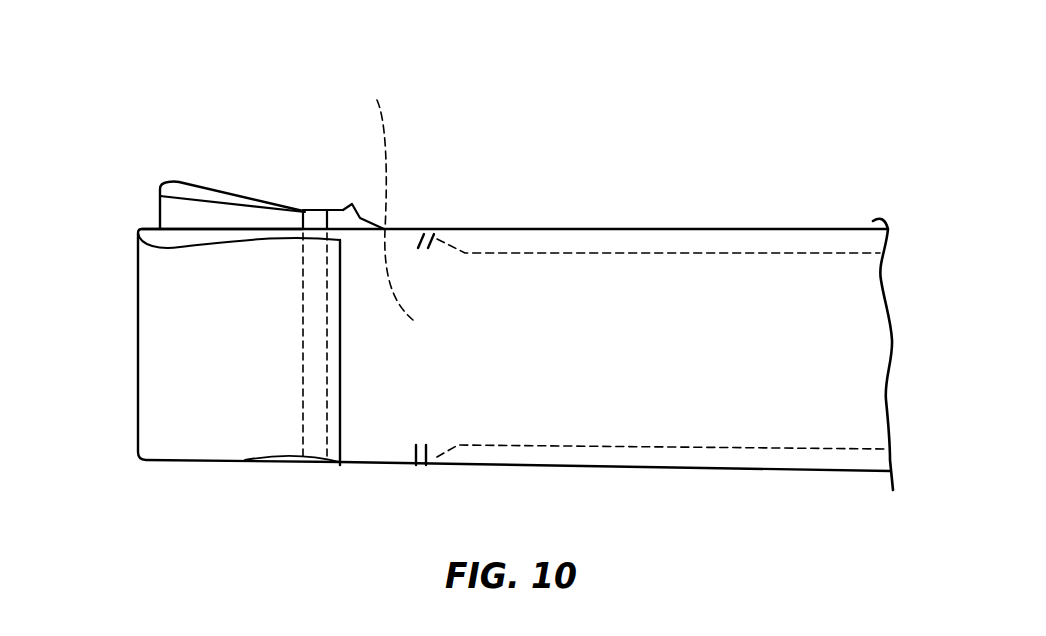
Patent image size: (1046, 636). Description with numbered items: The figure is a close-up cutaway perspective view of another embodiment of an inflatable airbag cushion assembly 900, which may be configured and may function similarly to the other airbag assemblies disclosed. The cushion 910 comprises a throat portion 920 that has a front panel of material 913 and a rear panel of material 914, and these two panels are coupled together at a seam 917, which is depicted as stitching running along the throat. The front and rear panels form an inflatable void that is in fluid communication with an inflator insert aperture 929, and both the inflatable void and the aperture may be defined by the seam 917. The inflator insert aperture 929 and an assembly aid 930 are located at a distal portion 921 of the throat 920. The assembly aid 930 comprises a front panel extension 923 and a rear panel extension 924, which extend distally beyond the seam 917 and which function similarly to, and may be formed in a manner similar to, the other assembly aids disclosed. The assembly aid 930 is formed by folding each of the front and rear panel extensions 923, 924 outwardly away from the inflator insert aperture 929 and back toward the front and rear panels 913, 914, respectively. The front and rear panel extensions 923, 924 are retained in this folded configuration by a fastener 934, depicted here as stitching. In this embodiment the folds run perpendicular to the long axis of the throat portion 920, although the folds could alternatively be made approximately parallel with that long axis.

The inflatable airbag cushion assembly 900 is at (645, 133).
The cushion 910 is at (722, 185).
The front panel of material 913 is at (657, 367).
The rear panel of material 914 is at (358, 222).
The seam 917 is at (503, 253).
The throat portion 920 is at (768, 287).
The distal portion 921 is at (262, 167).
The front panel extension 923 is at (190, 427).
The rear panel extension 924 is at (170, 215).
The inflator insert aperture 929 is at (375, 198).
The assembly aid 930 is at (200, 175).
The fastener 934 is at (333, 213).